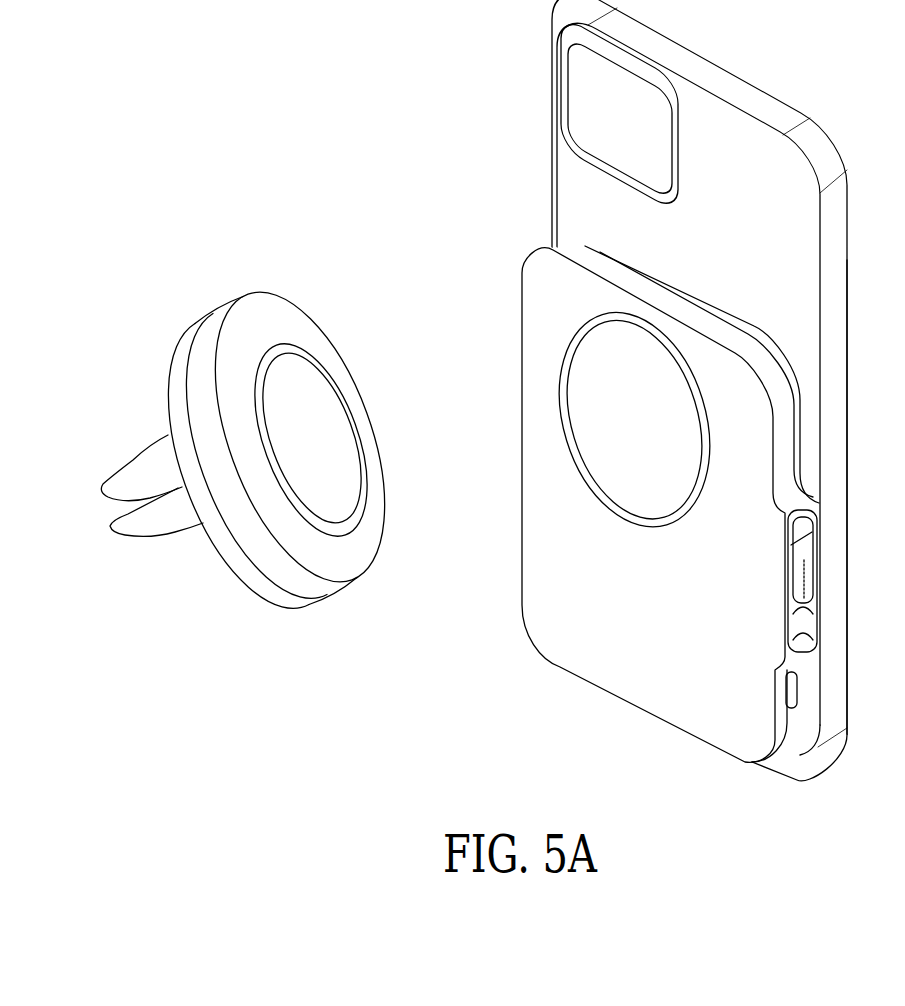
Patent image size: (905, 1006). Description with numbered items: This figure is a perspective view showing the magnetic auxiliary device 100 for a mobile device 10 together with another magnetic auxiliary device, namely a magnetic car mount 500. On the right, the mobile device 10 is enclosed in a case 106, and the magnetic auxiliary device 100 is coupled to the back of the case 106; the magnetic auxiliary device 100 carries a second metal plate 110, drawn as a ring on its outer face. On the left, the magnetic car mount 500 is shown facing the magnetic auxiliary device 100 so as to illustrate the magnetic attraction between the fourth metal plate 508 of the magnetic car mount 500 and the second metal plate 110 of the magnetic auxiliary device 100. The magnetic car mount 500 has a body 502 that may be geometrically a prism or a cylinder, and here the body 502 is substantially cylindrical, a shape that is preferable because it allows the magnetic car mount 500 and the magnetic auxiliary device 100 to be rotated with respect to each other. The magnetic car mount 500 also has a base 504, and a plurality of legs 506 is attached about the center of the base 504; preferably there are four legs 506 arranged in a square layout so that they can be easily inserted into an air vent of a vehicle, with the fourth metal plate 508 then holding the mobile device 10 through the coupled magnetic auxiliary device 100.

The mobile device 10 is at (710, 78).
The case 106 is at (770, 180).
The magnetic auxiliary device 100 is at (537, 318).
The second metal plate 110 is at (563, 385).
The magnetic car mount 500 is at (217, 440).
The body 502 is at (267, 557).
The base 504 is at (347, 553).
The legs 506 is at (123, 523).
The fourth metal plate 508 is at (312, 362).